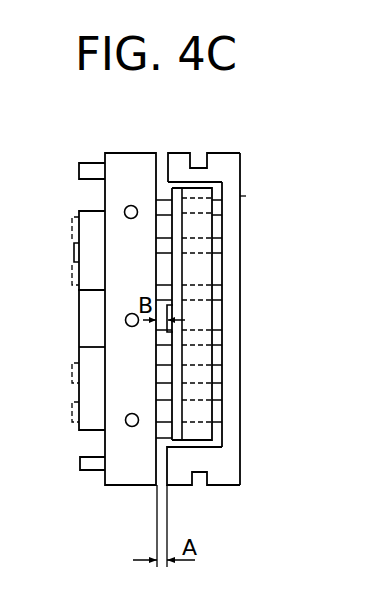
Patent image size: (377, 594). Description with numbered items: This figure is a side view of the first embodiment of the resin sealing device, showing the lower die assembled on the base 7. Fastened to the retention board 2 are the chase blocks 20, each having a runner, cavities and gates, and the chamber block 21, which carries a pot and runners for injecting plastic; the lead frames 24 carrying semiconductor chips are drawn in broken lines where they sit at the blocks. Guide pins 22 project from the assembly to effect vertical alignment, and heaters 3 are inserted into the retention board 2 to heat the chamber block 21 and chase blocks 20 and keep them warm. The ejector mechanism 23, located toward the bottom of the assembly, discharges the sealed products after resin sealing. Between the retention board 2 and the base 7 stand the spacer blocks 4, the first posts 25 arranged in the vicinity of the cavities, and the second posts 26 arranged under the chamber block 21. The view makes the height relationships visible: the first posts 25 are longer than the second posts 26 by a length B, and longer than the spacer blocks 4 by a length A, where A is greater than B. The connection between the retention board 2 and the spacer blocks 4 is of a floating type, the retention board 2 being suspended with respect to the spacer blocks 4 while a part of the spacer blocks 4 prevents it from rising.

The retention board 2 is at (131, 175).
The heater 3 is at (132, 427).
The spacer block 4 is at (177, 163).
The base 7 is at (229, 170).
The chase block 20 is at (88, 220).
The chamber block 21 is at (79, 308).
The guide pin 22 is at (90, 168).
The ejector mechanism 23 is at (188, 442).
The lead frame 24 is at (72, 412).
The first post 25 is at (162, 200).
The second post 26 is at (167, 330).